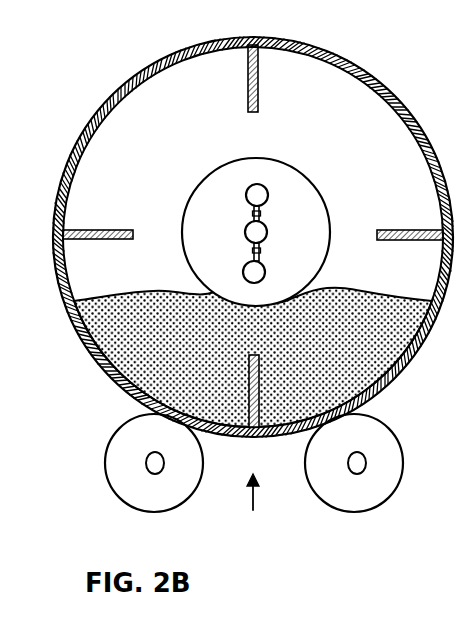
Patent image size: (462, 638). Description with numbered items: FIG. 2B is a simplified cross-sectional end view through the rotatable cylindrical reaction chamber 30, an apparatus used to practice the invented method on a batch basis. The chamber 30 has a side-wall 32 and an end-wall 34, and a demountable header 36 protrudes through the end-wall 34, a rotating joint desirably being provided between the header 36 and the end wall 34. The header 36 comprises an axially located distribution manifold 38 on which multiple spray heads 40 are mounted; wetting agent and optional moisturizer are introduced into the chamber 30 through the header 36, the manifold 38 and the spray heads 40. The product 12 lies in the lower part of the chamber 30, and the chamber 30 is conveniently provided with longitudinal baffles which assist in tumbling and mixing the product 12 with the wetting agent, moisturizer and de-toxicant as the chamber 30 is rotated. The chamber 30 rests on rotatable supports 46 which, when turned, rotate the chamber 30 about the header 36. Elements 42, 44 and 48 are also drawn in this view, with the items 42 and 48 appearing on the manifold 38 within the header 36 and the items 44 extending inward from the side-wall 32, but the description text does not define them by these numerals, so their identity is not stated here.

The product 12 is at (184, 363).
The rotatable cylindrical reaction chamber 30 is at (252, 507).
The side-wall 32 is at (378, 83).
The end-wall 34 is at (158, 95).
The demountable header 36 is at (186, 252).
The distribution manifold 38 is at (247, 232).
The spray heads 40 is at (252, 221).
The upper roller 42 is at (258, 184).
The baffles 44 is at (248, 81).
The rotatable supports 46 is at (108, 481).
The lower roller 48 is at (266, 272).